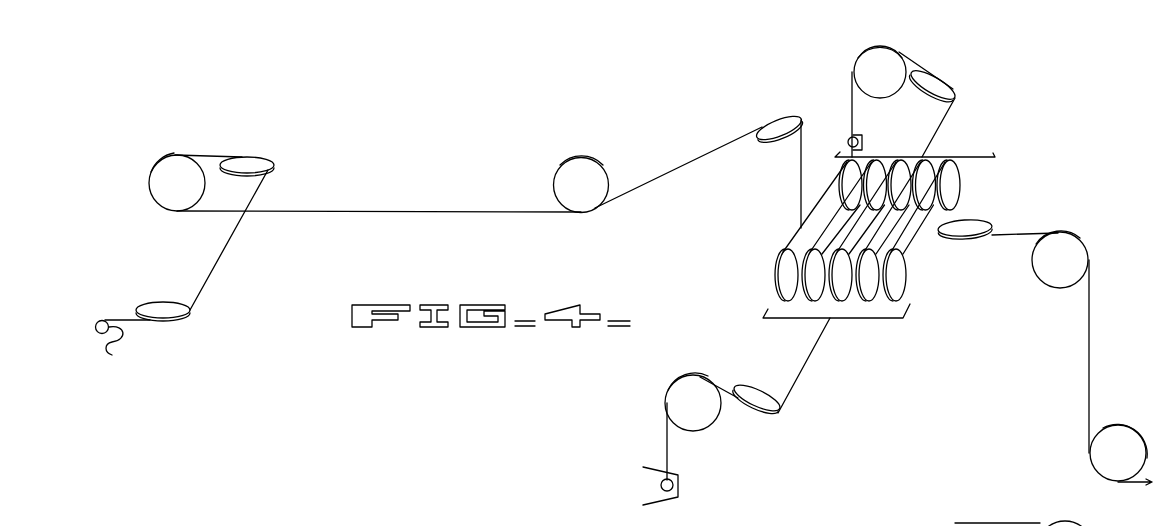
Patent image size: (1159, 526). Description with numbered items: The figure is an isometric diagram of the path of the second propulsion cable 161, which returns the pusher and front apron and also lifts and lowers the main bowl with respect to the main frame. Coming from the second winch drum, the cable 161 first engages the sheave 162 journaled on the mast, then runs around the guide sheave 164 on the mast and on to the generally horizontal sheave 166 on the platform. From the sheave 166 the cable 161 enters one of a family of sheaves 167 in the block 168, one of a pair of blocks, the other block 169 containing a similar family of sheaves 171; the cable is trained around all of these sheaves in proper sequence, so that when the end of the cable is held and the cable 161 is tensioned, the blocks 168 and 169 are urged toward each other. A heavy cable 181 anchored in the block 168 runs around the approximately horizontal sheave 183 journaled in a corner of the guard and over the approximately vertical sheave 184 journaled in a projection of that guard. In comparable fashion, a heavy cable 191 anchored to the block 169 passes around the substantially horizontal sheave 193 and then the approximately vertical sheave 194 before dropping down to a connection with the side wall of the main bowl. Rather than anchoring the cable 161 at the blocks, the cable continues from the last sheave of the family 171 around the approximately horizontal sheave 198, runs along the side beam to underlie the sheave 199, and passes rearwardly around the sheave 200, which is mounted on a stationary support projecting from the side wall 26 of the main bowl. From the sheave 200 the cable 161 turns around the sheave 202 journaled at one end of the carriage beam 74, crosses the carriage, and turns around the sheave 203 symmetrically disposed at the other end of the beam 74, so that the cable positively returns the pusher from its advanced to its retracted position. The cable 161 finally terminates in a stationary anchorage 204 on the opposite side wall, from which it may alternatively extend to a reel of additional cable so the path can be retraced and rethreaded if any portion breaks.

The side wall 26 is at (855, 136).
The carriage beam 74 is at (665, 500).
The second propulsion cable 161 is at (220, 155).
The sheave 162 is at (1120, 432).
The guide sheave 164 is at (1078, 250).
The horizontal sheave 166 is at (978, 223).
The family of sheaves 167 is at (953, 162).
The block 168 is at (973, 183).
The block 169 is at (770, 304).
The family of sheaves 171 is at (775, 280).
The heavy cable 181 is at (950, 116).
The horizontal sheave 183 is at (945, 85).
The vertical sheave 184 is at (857, 63).
The heavy cable 191 is at (800, 383).
The horizontal sheave 193 is at (758, 388).
The vertical sheave 194 is at (710, 420).
The horizontal sheave 198 is at (777, 120).
The sheave 199 is at (603, 175).
The sheave 200 is at (163, 203).
The sheave 202 is at (273, 157).
The sheave 203 is at (175, 318).
The stationary anchorage 204 is at (95, 328).